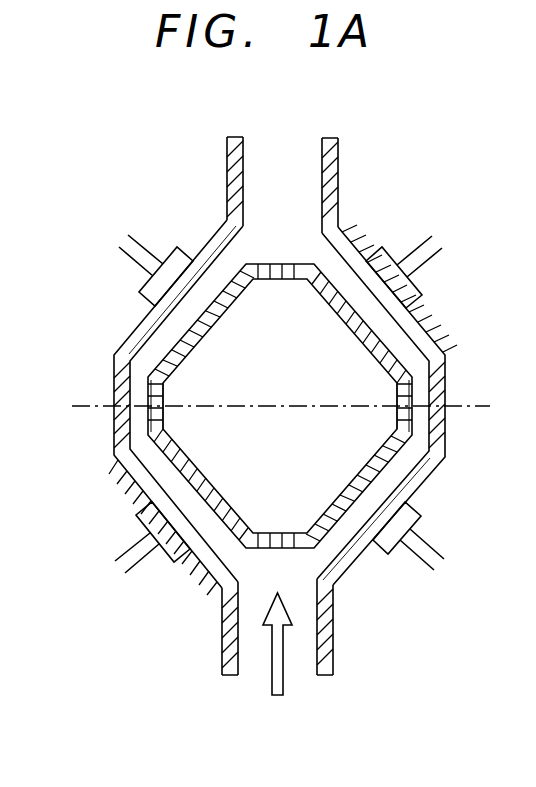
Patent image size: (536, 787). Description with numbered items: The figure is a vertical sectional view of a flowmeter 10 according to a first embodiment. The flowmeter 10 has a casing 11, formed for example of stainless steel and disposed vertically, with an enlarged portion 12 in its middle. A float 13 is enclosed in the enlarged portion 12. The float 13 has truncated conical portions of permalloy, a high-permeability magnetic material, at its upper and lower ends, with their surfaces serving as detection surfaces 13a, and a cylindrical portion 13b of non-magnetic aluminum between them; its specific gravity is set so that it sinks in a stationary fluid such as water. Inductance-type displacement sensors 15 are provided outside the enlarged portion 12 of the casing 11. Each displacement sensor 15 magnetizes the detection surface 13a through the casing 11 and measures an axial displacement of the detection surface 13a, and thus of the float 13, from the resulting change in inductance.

The flowmeter 10 is at (426, 207).
The casing 11 is at (225, 170).
The enlarged portion 12 is at (425, 478).
The float 13 is at (270, 342).
The detection surface 13a is at (383, 325).
The cylindrical portion 13b is at (390, 403).
The displacement sensor 15 is at (172, 248).